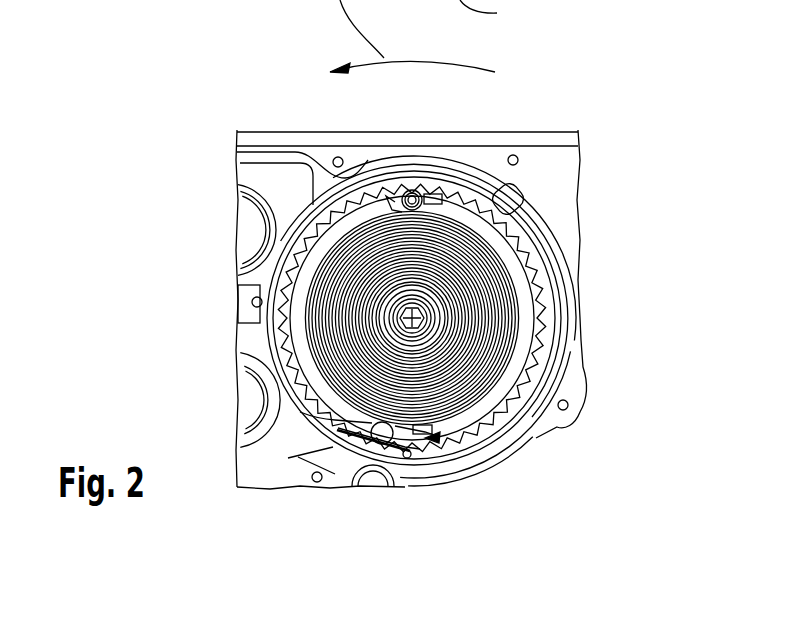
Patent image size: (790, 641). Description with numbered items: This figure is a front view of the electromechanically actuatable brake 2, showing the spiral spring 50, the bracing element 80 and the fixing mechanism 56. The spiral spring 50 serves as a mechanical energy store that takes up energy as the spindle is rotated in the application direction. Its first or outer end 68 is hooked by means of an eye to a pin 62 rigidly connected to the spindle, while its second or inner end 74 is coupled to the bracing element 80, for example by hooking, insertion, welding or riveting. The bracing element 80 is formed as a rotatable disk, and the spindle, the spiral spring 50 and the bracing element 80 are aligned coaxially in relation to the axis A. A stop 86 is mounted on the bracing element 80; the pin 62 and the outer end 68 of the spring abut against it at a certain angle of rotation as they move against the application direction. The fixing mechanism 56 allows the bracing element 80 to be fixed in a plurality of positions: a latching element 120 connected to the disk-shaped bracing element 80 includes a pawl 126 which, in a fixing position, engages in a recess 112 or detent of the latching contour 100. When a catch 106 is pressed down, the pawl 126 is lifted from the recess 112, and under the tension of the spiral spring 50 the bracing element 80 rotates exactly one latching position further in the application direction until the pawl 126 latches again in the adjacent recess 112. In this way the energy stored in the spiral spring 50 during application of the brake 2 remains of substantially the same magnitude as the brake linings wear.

The electromechanically actuatable brake 2 is at (550, 106).
The spiral spring 50 is at (500, 253).
The fixing mechanism 56 is at (331, 451).
The pin 62 is at (412, 190).
The outer end 68 is at (393, 197).
The inner end 74 is at (390, 272).
The bracing element 80 is at (442, 322).
The stop 86 is at (428, 197).
The latching contour 100 is at (357, 445).
The catch 106 is at (340, 411).
The recess 112 is at (432, 445).
The latching element 120 is at (438, 438).
The pawl 126 is at (405, 458).
The axis A is at (416, 318).